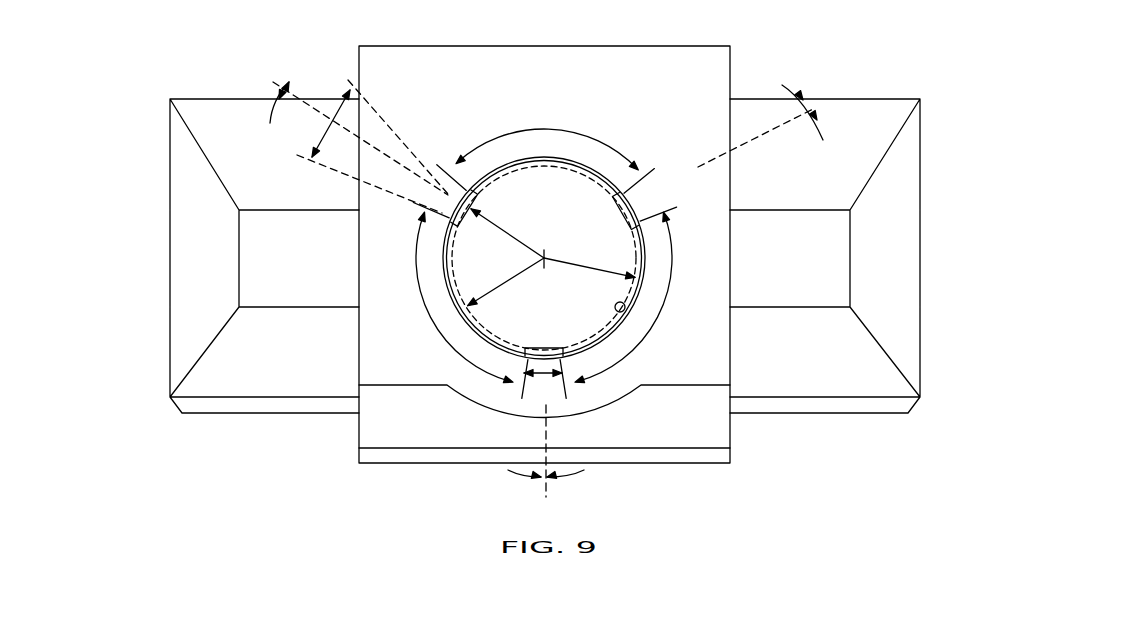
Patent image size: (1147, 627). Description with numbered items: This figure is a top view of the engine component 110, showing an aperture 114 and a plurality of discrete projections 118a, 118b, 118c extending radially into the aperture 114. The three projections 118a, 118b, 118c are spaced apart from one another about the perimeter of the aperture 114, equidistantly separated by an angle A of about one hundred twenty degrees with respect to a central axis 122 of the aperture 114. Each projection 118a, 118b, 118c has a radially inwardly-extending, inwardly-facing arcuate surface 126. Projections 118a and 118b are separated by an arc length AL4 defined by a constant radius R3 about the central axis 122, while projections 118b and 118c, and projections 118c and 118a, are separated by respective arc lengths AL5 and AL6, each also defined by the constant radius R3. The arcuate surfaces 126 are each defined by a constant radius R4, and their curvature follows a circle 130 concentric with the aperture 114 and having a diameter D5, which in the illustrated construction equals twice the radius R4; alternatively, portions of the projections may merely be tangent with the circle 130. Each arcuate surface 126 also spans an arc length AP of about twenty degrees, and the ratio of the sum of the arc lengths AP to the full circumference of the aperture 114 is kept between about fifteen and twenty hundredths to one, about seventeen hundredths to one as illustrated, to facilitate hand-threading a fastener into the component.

The engine component 110 is at (830, 58).
The aperture 114 is at (624, 313).
The projection 118a is at (443, 192).
The projection 118b is at (650, 212).
The projection 118c is at (540, 376).
The central axis 122 is at (548, 250).
The arcuate surface 126 is at (468, 204).
The circle 130 is at (603, 328).
The arc length AL4 is at (553, 128).
The arc length AL5 is at (648, 330).
The arc length AL6 is at (438, 328).
The radius R3 is at (512, 283).
The radius R4 is at (530, 240).
The diameter D5 is at (606, 270).
The angle A is at (270, 123).
The arc length AP is at (348, 95).